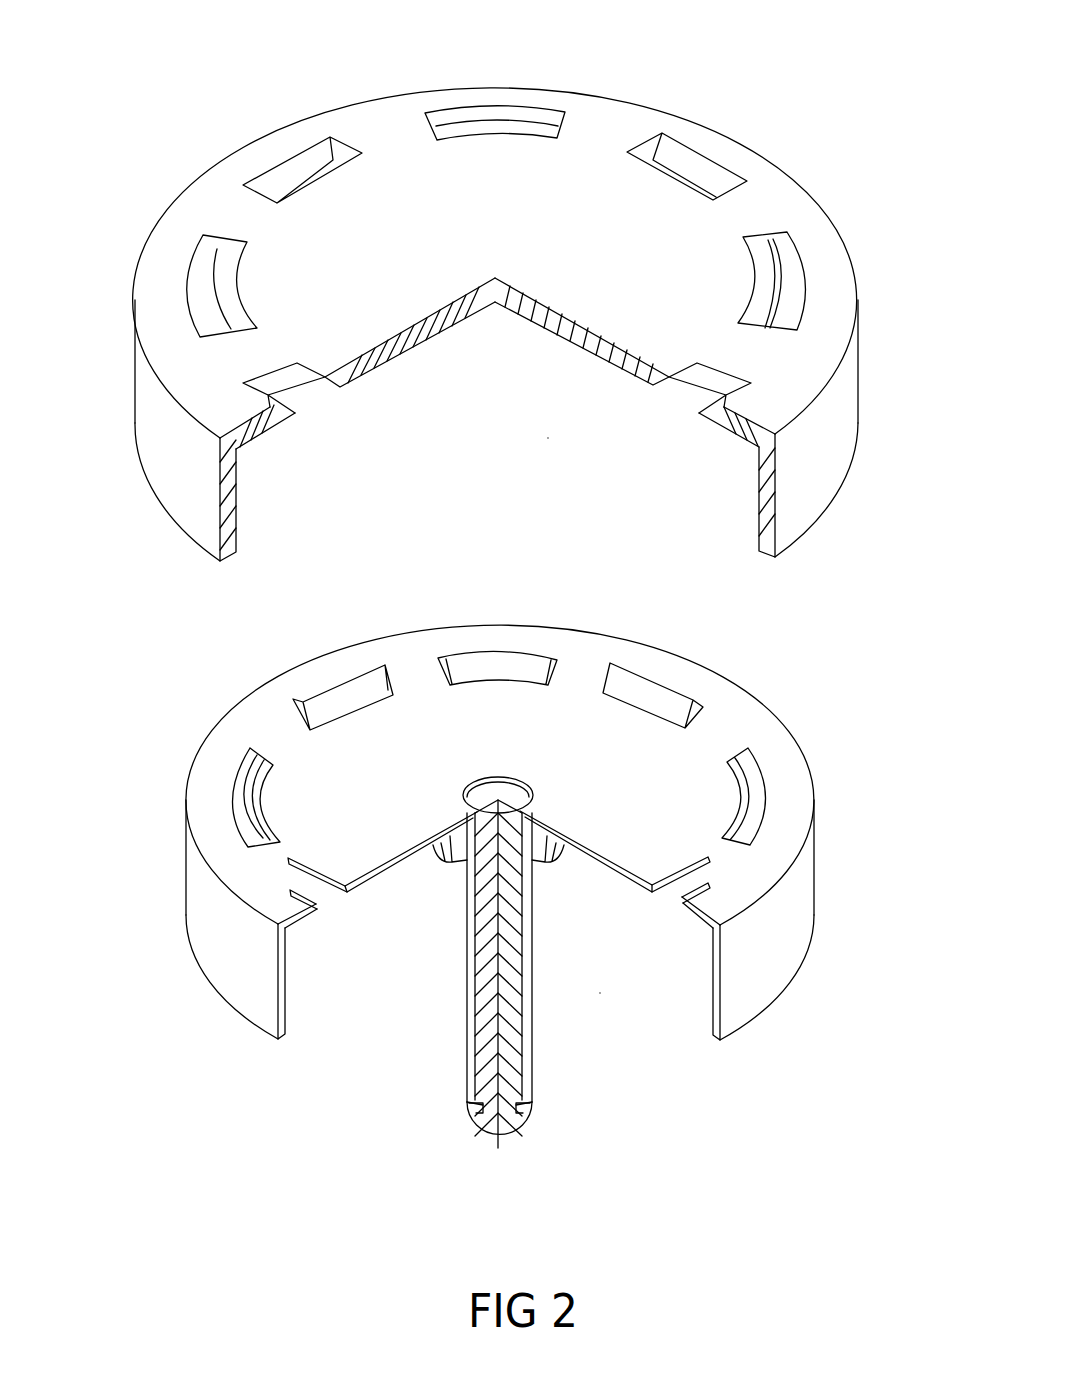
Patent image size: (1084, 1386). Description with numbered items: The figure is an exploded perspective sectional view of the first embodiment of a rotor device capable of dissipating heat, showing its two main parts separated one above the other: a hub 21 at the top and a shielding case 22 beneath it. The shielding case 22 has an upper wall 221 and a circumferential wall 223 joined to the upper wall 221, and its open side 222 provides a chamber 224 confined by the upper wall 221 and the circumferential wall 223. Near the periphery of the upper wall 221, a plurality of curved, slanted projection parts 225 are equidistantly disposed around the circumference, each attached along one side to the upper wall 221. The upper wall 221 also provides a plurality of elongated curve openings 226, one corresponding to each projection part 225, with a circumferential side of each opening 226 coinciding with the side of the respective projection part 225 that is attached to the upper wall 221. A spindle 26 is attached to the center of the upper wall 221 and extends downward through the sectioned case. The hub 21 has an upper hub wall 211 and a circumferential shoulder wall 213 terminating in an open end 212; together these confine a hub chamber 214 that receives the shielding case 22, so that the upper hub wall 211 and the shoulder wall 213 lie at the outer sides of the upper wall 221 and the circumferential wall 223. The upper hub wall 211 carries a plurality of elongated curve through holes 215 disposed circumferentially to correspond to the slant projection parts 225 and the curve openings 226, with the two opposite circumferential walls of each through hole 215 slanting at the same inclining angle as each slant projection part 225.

The hub 21 is at (702, 88).
The upper hub wall 211 is at (397, 210).
The open end 212 is at (240, 548).
The circumferential shoulder wall 213 is at (768, 473).
The hub chamber 214 is at (548, 438).
The elongated curve through hole 215 is at (765, 268).
The shielding case 22 is at (755, 662).
The upper wall 221 is at (640, 795).
The open side 222 is at (303, 1018).
The circumferential wall 223 is at (718, 980).
The chamber 224 is at (600, 993).
The slant projection part 225 is at (300, 702).
The elongated curve opening 226 is at (238, 803).
The spindle 26 is at (483, 1038).